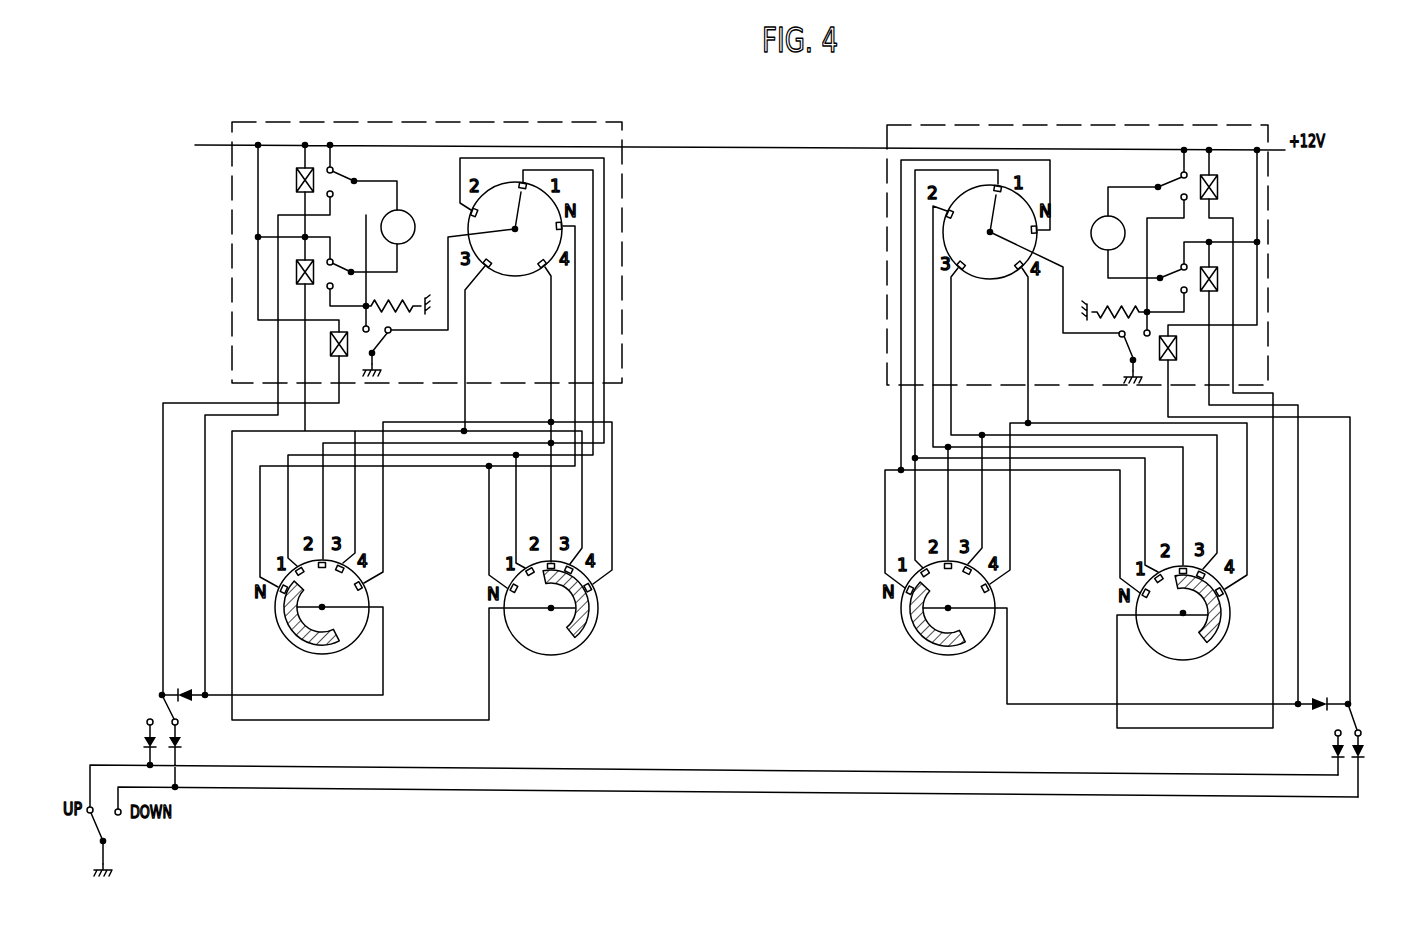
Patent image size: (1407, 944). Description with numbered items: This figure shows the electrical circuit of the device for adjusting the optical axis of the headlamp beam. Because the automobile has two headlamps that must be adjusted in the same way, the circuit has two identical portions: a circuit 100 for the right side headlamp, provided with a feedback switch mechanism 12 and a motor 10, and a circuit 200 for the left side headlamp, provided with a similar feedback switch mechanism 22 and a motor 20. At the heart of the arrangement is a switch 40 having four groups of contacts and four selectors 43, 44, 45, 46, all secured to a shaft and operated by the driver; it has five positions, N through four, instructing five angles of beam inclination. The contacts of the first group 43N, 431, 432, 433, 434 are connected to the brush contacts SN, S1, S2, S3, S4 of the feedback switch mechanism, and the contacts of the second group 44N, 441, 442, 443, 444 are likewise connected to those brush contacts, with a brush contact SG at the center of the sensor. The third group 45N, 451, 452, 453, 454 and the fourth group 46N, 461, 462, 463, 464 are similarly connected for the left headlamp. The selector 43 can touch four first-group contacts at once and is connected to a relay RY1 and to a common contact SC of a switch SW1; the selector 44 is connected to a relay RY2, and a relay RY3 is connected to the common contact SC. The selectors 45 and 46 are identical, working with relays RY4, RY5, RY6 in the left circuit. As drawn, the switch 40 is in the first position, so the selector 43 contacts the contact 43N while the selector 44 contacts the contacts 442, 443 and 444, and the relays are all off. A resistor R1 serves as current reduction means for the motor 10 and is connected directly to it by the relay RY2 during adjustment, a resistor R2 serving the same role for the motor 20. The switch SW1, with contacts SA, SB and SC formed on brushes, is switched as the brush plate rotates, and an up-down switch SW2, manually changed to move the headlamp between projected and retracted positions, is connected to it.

The feedback switch mechanism 12 is at (447, 168).
The feedback switch mechanism 22 is at (1067, 168).
The circuit 100 is at (591, 122).
The circuit 200 is at (933, 125).
The motor 10 is at (415, 214).
The motor 20 is at (1100, 217).
The switch 40 is at (943, 673).
The selector 43 is at (303, 634).
The selector 44 is at (582, 626).
The selector 45 is at (948, 608).
The selector 46 is at (1217, 634).
The contact 43N is at (282, 593).
The contact 431 is at (295, 566).
The contact 432 is at (319, 560).
The contact 433 is at (343, 562).
The contact 434 is at (365, 587).
The contact 44N is at (513, 597).
The contact 441 is at (524, 568).
The contact 442 is at (549, 562).
The contact 443 is at (571, 565).
The contact 444 is at (592, 587).
The contact 45N is at (908, 594).
The contact 451 is at (922, 569).
The contact 452 is at (946, 562).
The contact 453 is at (967, 563).
The contact 454 is at (993, 590).
The contact 46N is at (1140, 593).
The contact 461 is at (1156, 575).
The contact 462 is at (1181, 564).
The contact 463 is at (1203, 568).
The contact 464 is at (1225, 594).
The relay RY1 is at (296, 187).
The relay RY2 is at (296, 271).
The relay RY3 is at (330, 349).
The relay RY4 is at (1233, 199).
The relay RY5 is at (1218, 283).
The relay RY6 is at (1178, 349).
The resistor R1 is at (385, 304).
The resistor R2 is at (1127, 311).
The brush contact S1 is at (995, 190).
The brush contact S2 is at (949, 220).
The brush contact S3 is at (964, 270).
The brush contact S4 is at (1016, 270).
The brush contact SN is at (1036, 234).
The brush contact SG is at (994, 196).
The switch SW1 is at (1362, 728).
The up-down switch SW2 is at (105, 828).
The contact SA is at (1337, 735).
The contact SB is at (1362, 736).
The common contact SC is at (1365, 700).